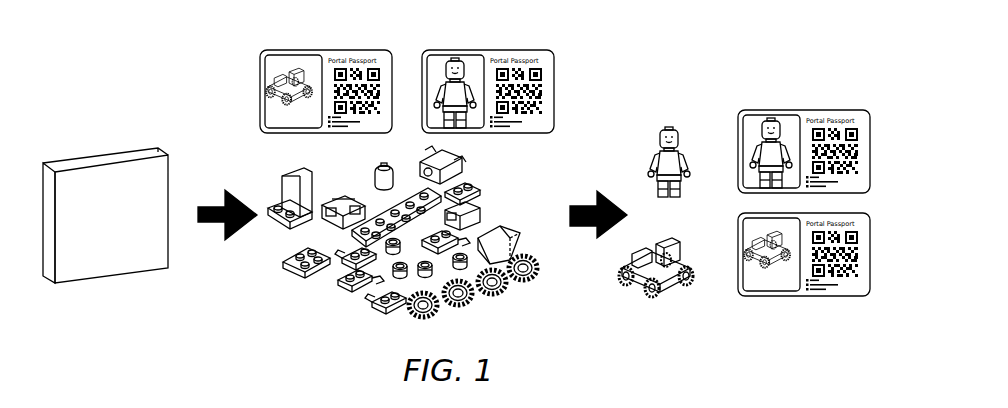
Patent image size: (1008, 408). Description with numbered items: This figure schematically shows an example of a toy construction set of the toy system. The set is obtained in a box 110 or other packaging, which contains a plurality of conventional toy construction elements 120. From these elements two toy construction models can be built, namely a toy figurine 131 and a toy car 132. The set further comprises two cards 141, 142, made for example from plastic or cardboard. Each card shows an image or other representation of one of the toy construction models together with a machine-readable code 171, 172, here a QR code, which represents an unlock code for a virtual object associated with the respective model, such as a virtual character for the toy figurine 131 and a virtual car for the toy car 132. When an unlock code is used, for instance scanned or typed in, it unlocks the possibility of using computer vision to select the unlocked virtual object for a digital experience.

The box 110 is at (70, 285).
The toy construction elements 120 is at (340, 310).
The toy figurine 131 is at (660, 143).
The toy car 132 is at (632, 283).
The card 141 is at (548, 90).
The card 142 is at (260, 92).
The machine-readable code 171 is at (572, 118).
The machine-readable code 172 is at (345, 62).